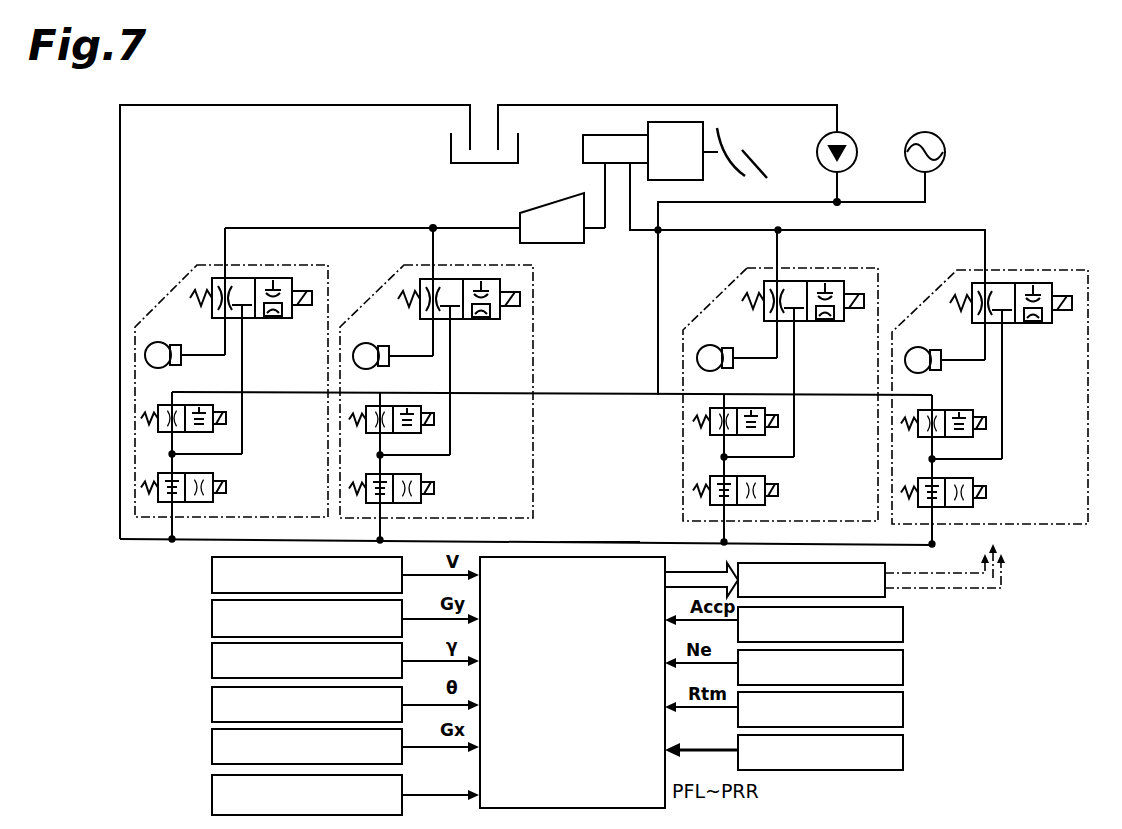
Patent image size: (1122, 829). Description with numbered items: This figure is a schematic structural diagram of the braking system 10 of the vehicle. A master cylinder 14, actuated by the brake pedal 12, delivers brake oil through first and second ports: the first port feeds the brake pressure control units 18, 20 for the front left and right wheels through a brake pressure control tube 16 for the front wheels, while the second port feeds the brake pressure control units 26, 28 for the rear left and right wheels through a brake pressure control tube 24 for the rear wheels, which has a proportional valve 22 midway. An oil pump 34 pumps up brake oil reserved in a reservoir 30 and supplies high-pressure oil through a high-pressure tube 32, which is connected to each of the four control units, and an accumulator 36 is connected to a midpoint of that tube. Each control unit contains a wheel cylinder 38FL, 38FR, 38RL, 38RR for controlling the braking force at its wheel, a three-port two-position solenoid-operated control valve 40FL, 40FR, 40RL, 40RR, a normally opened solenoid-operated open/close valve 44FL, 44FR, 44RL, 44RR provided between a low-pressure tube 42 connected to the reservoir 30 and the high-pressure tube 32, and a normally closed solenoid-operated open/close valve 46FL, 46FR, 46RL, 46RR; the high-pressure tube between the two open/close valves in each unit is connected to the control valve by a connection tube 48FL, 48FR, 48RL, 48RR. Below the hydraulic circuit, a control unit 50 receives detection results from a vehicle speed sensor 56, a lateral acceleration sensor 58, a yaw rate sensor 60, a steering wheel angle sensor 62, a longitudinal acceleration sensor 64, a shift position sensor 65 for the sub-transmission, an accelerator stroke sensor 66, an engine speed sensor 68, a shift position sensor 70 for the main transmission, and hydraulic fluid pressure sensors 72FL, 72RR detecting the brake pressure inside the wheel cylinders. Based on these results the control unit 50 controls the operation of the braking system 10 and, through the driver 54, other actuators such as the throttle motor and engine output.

The braking system 10 is at (106, 156).
The brake pedal 12 is at (758, 166).
The master cylinder 14 is at (593, 135).
The brake pressure control tube for the front wheels 16 is at (655, 233).
The brake pressure control unit 18 is at (706, 306).
The brake pressure control unit 20 is at (924, 300).
The proportional valve 22 is at (525, 210).
The brake pressure control tube for the rear wheels 24 is at (287, 228).
The brake pressure control unit 26 is at (160, 300).
The brake pressure control unit 28 is at (370, 298).
The reservoir 30 is at (451, 150).
The high-pressure tube 32 is at (658, 331).
The oil pump 34 is at (858, 158).
The accumulator 36 is at (945, 153).
The wheel cylinder 38RL is at (162, 368).
The wheel cylinder 38RR is at (398, 367).
The wheel cylinder 38FL is at (740, 369).
The wheel cylinder 38FR is at (949, 371).
The solenoid-operated control valve 40RL is at (246, 278).
The solenoid-operated control valve 40RR is at (460, 292).
The solenoid-operated control valve 40FL is at (803, 294).
The solenoid-operated control valve 40FR is at (1011, 295).
The low-pressure tube 42 is at (600, 541).
The normally opened solenoid-operated open/close valve 44RL is at (205, 432).
The normally opened solenoid-operated open/close valve 44RR is at (429, 432).
The normally opened solenoid-operated open/close valve 44FL is at (771, 434).
The normally opened solenoid-operated open/close valve 44FR is at (980, 436).
The normally closed solenoid-operated open/close valve 46RL is at (205, 472).
The normally closed solenoid-operated open/close valve 46RR is at (428, 485).
The normally closed solenoid-operated open/close valve 46FL is at (770, 487).
The normally closed solenoid-operated open/close valve 46FR is at (979, 489).
The connection tube 48RL is at (243, 345).
The connection tube 48RR is at (489, 387).
The connection tube 48FL is at (831, 389).
The connection tube 48FR is at (1040, 391).
The control unit 50 is at (596, 733).
The driver 54 is at (885, 568).
The vehicle speed sensor 56 is at (212, 578).
The lateral acceleration sensor 58 is at (212, 620).
The yaw rate sensor 60 is at (212, 661).
The steering wheel angle sensor 62 is at (212, 703).
The longitudinal acceleration sensor 64 is at (212, 745).
The shift position sensor 65 is at (212, 785).
The accelerator stroke sensor 66 is at (905, 622).
The engine speed sensor 68 is at (905, 665).
The shift position sensor 70 is at (905, 707).
The hydraulic fluid pressure sensor 72FL is at (892, 752).
The hydraulic fluid pressure sensor 72RR is at (905, 752).